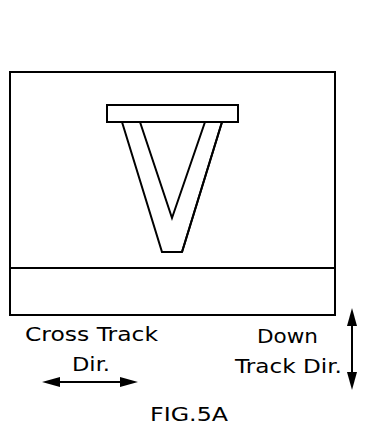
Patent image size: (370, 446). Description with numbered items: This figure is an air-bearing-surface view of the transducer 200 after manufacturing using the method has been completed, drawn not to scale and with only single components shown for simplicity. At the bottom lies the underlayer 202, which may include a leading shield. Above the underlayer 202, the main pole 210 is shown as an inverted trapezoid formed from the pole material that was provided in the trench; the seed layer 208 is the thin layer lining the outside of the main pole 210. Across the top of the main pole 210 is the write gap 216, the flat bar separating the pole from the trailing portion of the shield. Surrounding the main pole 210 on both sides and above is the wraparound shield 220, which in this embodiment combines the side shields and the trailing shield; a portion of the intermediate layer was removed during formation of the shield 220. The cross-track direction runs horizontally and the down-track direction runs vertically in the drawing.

The transducer 200 is at (221, 37).
The seed layer 208 is at (133, 163).
The write gap 216 is at (188, 105).
The main pole 210 is at (214, 148).
The wraparound shield 220 is at (172, 223).
The underlayer 202 is at (172, 291).